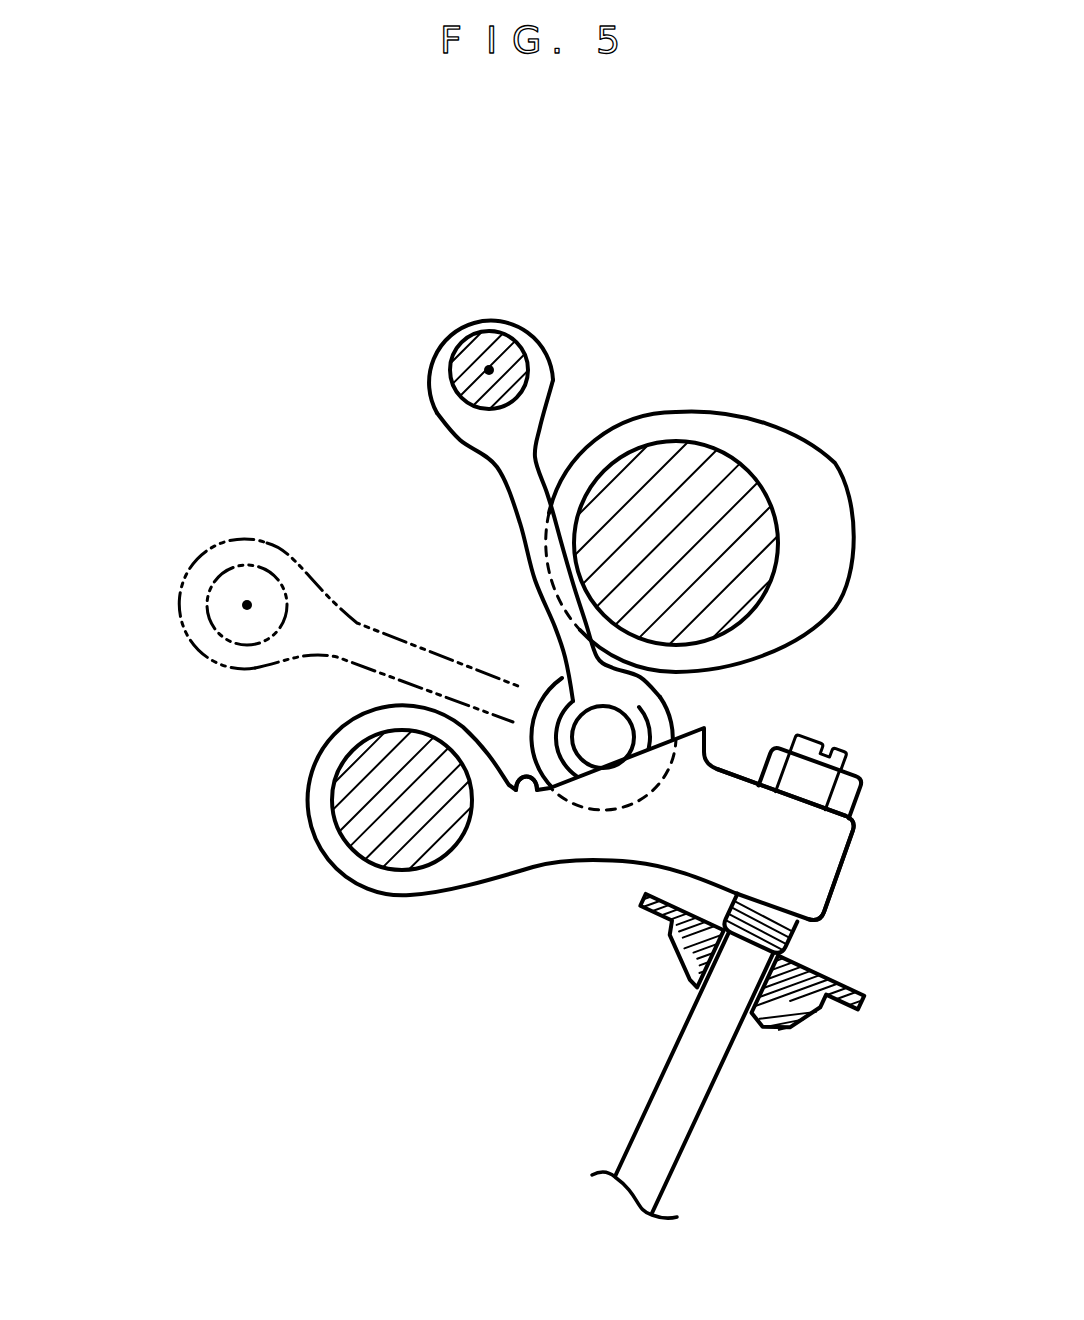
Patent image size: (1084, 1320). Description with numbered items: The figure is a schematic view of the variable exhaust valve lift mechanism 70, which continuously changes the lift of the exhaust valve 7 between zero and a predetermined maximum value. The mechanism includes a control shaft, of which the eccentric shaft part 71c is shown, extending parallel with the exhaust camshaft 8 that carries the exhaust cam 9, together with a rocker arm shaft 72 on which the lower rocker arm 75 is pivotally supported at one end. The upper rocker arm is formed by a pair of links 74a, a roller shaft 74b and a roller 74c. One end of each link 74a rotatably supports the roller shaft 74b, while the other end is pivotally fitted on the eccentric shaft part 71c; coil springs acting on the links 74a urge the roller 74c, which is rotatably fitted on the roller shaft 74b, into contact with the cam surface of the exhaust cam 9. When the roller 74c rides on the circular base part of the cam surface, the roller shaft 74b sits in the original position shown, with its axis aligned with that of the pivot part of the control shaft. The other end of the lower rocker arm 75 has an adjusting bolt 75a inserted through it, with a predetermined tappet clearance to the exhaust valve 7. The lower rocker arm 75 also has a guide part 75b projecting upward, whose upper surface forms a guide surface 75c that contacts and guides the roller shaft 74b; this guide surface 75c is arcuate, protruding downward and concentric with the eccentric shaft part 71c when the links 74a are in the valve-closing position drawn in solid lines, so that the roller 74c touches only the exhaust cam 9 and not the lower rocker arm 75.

The exhaust valve 7 is at (697, 1125).
The exhaust camshaft 8 is at (682, 455).
The exhaust cam 9 is at (788, 452).
The variable exhaust valve lift mechanism 70 is at (255, 403).
The eccentric shaft part 71c is at (508, 352).
The rocker arm shaft 72 is at (402, 853).
The link 74a is at (496, 308).
The roller shaft 74b is at (600, 733).
The roller 74c is at (678, 697).
The lower rocker arm 75 is at (340, 866).
The adjusting bolt 75a is at (860, 806).
The guide part 75b is at (710, 745).
The guide surface 75c is at (520, 778).